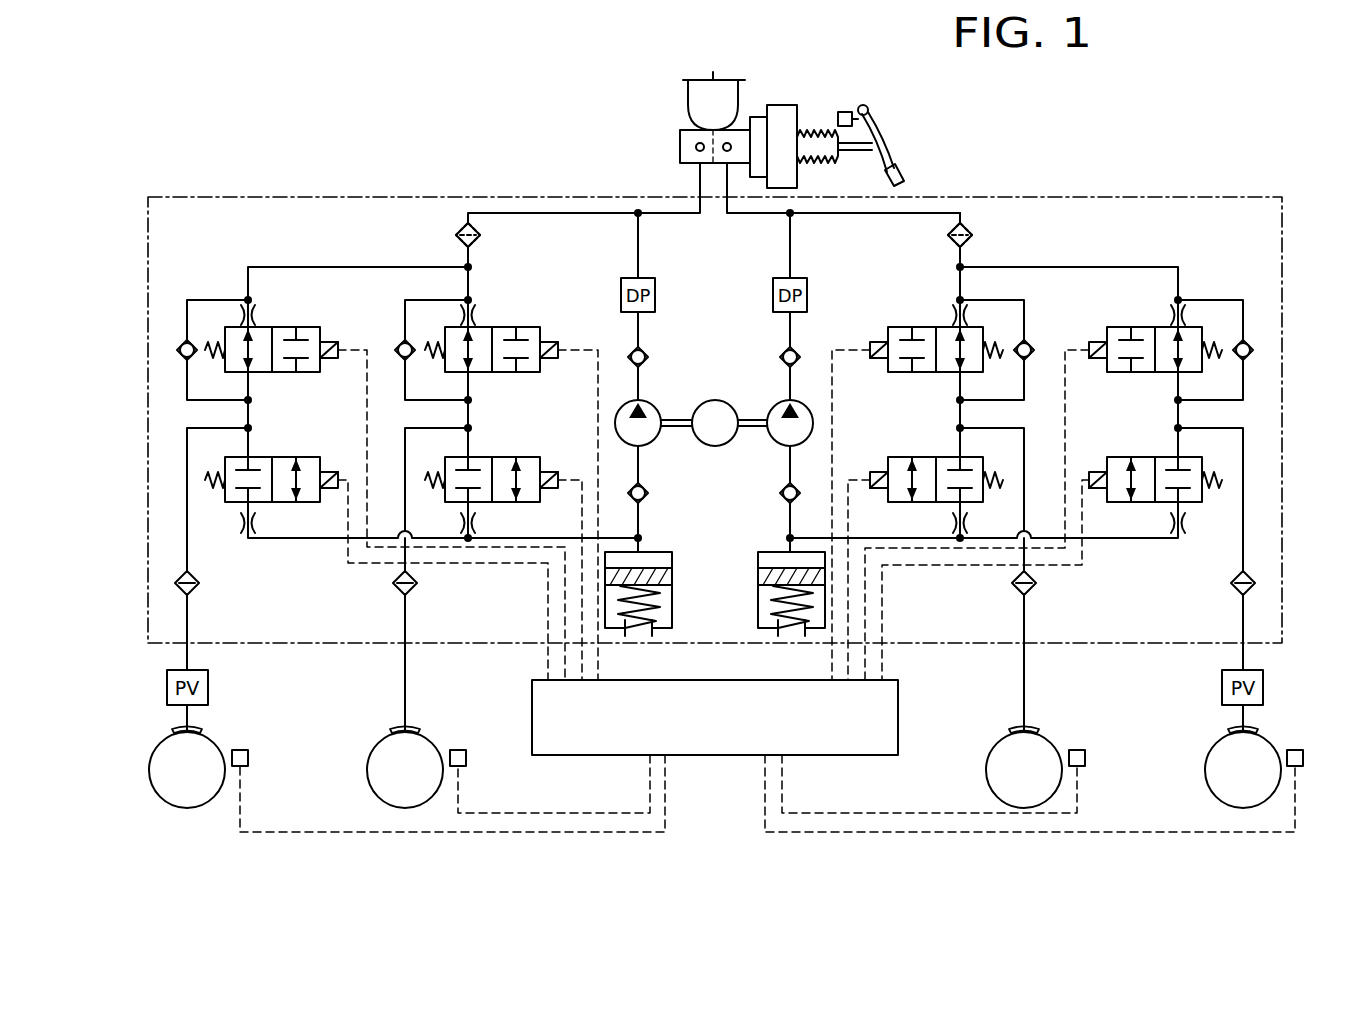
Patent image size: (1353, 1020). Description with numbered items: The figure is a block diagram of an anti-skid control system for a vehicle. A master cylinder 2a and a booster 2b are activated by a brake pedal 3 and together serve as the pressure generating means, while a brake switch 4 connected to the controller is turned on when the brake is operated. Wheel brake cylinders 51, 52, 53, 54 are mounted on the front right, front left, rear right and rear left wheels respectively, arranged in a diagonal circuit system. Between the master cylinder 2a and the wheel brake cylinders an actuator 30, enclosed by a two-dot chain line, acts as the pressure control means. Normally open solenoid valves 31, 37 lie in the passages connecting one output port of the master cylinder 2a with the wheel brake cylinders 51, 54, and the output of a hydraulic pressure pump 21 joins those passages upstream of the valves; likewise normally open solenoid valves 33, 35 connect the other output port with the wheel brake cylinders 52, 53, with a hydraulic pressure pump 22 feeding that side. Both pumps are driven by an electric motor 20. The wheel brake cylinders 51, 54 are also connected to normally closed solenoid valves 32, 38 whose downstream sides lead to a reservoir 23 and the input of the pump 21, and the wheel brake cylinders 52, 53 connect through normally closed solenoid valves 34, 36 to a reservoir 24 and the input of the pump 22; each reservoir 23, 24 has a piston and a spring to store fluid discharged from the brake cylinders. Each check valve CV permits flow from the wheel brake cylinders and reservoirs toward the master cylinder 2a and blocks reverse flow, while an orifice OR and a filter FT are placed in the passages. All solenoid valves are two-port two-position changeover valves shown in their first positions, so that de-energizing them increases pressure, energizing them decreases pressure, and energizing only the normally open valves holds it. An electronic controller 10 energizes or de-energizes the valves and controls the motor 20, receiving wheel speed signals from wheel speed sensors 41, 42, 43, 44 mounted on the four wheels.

The master cylinder 2a is at (680, 142).
The booster 2b is at (777, 105).
The brake pedal 3 is at (876, 160).
The brake switch 4 is at (843, 112).
The electronic controller 10 is at (898, 700).
The electric motor 20 is at (707, 446).
The hydraulic pressure pump 21 is at (655, 410).
The hydraulic pressure pump 22 is at (774, 410).
The reservoir 23 is at (658, 552).
The reservoir 24 is at (775, 552).
The actuator 30 is at (1058, 197).
The normally open solenoid valve 31 is at (500, 327).
The normally closed solenoid valve 32 is at (500, 457).
The normally open solenoid valve 33 is at (932, 327).
The normally closed solenoid valve 34 is at (932, 457).
The normally open solenoid valve 35 is at (1151, 327).
The normally closed solenoid valve 36 is at (1151, 457).
The normally open solenoid valve 37 is at (282, 327).
The normally closed solenoid valve 38 is at (282, 457).
The wheel speed sensor 41 is at (465, 750).
The wheel speed sensor 42 is at (1084, 750).
The wheel speed sensor 43 is at (1302, 750).
The wheel speed sensor 44 is at (247, 750).
The wheel brake cylinder 51 is at (423, 731).
The wheel brake cylinder 52 is at (1042, 731).
The wheel brake cylinder 53 is at (1260, 731).
The wheel brake cylinder 54 is at (205, 731).
The filter FT is at (456, 235).
The check valve CV is at (400, 343).
The orifice OR is at (242, 520).